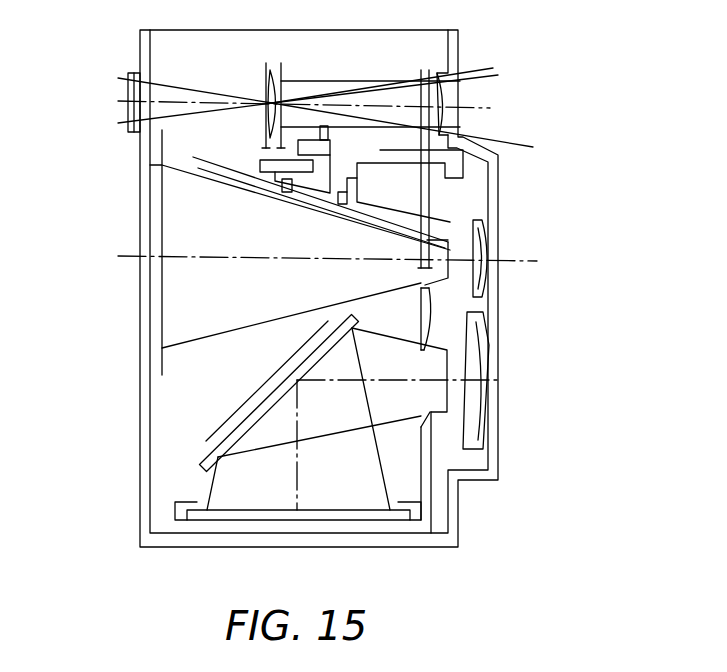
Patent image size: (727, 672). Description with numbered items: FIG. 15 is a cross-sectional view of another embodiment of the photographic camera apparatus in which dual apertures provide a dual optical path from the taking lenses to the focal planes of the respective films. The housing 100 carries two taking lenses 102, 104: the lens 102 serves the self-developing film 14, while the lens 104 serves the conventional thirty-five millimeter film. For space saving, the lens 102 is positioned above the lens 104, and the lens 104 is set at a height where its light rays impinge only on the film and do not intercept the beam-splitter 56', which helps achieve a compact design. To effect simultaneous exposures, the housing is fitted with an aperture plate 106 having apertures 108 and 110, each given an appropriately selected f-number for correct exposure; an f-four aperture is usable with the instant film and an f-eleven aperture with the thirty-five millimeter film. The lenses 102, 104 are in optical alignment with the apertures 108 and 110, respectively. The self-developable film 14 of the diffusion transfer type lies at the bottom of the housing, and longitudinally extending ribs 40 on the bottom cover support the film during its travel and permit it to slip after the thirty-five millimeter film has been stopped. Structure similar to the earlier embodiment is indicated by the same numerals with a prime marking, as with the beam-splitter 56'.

The housing 100 is at (110, 142).
The longitudinally extending ribs 40 is at (167, 276).
The aperture plate 106 is at (422, 198).
The taking lens 104 is at (483, 244).
The taking lens 102 is at (492, 354).
The aperture 108 is at (430, 413).
The aperture 110 is at (421, 283).
The beam-splitter 56' is at (269, 393).
The self-developable film 14 is at (268, 508).